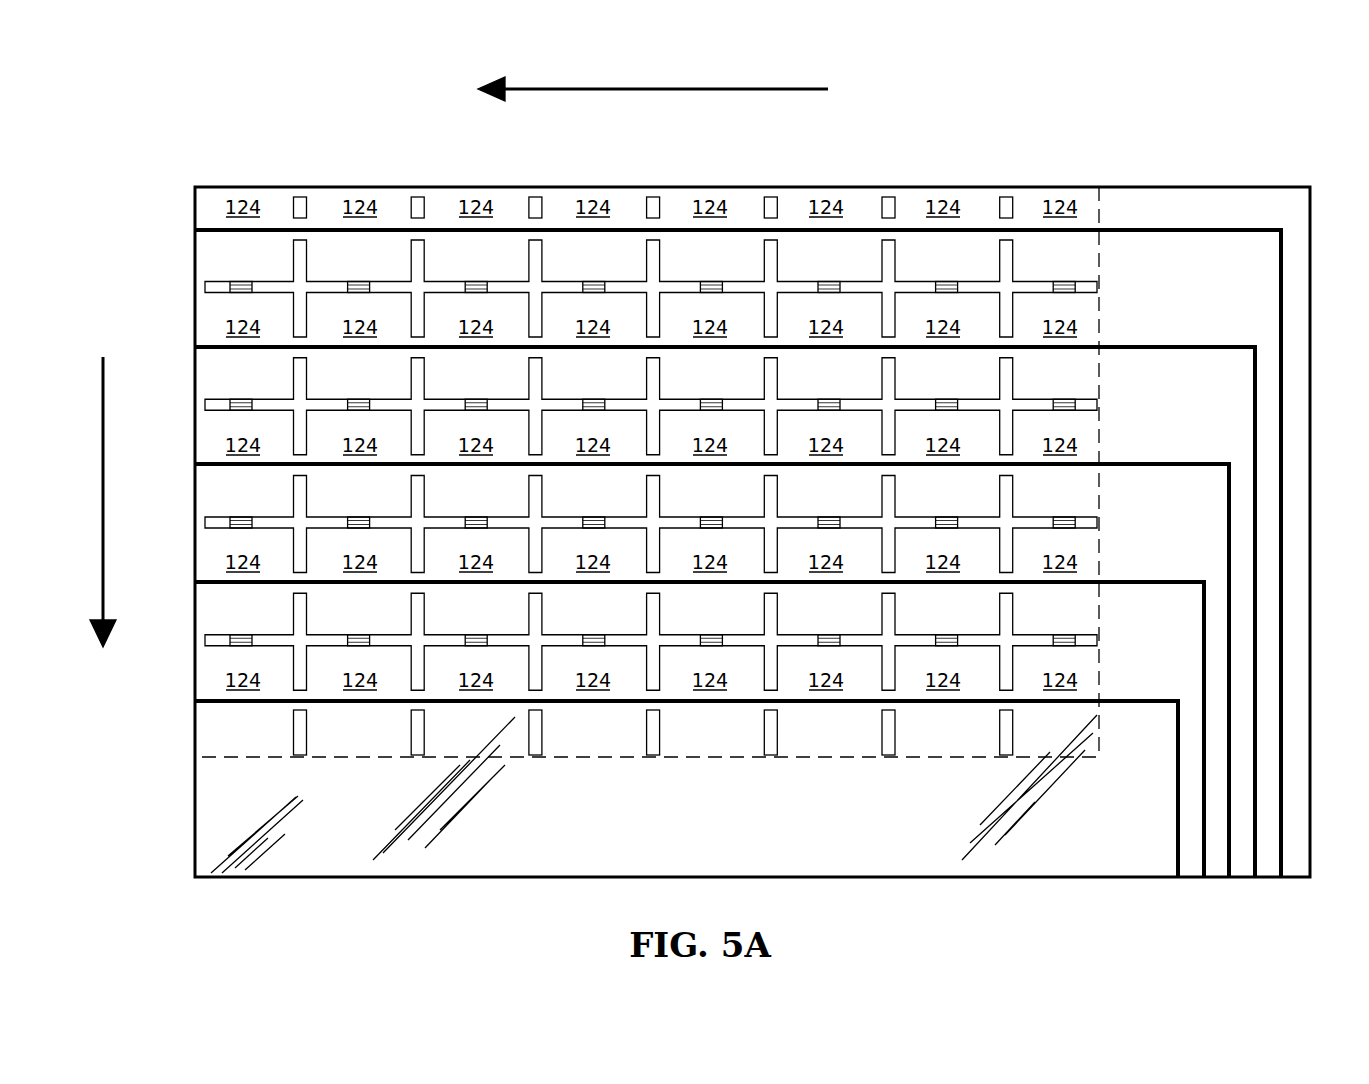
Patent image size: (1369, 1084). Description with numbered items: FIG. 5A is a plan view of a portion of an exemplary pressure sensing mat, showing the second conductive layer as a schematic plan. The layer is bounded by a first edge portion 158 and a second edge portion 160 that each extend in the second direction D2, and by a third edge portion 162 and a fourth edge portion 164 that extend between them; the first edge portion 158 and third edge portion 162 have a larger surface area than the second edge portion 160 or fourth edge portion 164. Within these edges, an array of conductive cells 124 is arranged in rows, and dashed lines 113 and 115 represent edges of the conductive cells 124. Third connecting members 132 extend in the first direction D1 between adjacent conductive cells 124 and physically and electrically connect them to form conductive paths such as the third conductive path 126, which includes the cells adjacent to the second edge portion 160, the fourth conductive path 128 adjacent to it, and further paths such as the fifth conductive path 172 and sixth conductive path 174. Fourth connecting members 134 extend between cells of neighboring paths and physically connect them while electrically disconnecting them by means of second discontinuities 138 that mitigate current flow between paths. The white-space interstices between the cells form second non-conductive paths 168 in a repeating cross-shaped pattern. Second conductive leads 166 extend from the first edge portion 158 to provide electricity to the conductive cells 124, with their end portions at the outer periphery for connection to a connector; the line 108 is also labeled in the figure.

The pixel electrode line 108 is at (768, 640).
The dashed line 113 is at (1100, 323).
The dashed line 115 is at (228, 760).
The conductive cells 124 is at (651, 443).
The third conductive path 126 is at (185, 203).
The fourth conductive path 128 is at (182, 352).
The third connecting members 132 is at (303, 213).
The fourth connecting members 134 is at (1128, 173).
The second discontinuities 138 is at (213, 287).
The first edge portion 158 is at (360, 828).
The second edge portion 160 is at (298, 195).
The third edge portion 162 is at (1297, 274).
The fourth edge portion 164 is at (205, 641).
The second conductive leads 166 is at (1167, 888).
The second non-conductive paths 168 is at (183, 288).
The fifth conductive path 172 is at (182, 582).
The sixth conductive path 174 is at (182, 686).
The first direction D1 is at (100, 510).
The second direction D2 is at (638, 88).